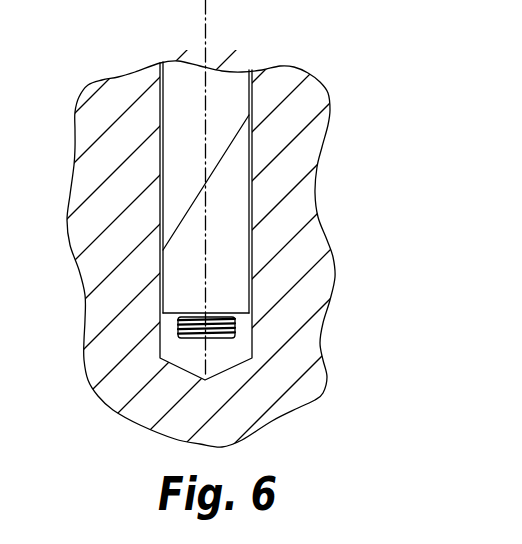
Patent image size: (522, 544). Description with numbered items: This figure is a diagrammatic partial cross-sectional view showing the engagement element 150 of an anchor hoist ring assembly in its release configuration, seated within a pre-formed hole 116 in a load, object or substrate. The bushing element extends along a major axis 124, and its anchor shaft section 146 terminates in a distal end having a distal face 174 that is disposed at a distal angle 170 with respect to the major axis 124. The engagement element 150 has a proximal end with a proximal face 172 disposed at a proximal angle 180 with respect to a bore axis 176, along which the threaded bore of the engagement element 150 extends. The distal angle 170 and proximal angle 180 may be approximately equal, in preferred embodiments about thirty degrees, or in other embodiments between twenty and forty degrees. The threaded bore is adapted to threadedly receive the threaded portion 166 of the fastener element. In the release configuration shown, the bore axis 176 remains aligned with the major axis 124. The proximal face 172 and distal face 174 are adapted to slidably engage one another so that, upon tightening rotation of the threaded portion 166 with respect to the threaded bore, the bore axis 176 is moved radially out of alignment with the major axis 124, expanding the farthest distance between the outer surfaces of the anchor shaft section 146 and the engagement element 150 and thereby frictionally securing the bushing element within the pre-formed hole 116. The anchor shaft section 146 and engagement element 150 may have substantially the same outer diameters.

The pre-formed hole 116 is at (225, 360).
The major axis 124 is at (207, 36).
The anchor shaft section 146 is at (178, 110).
The engagement element 150 is at (228, 264).
The threaded portion 166 is at (178, 332).
The distal angle 170 is at (240, 128).
The proximal face 172 is at (250, 180).
The distal face 174 is at (197, 197).
The bore axis 176 is at (207, 216).
The proximal angle 180 is at (205, 251).